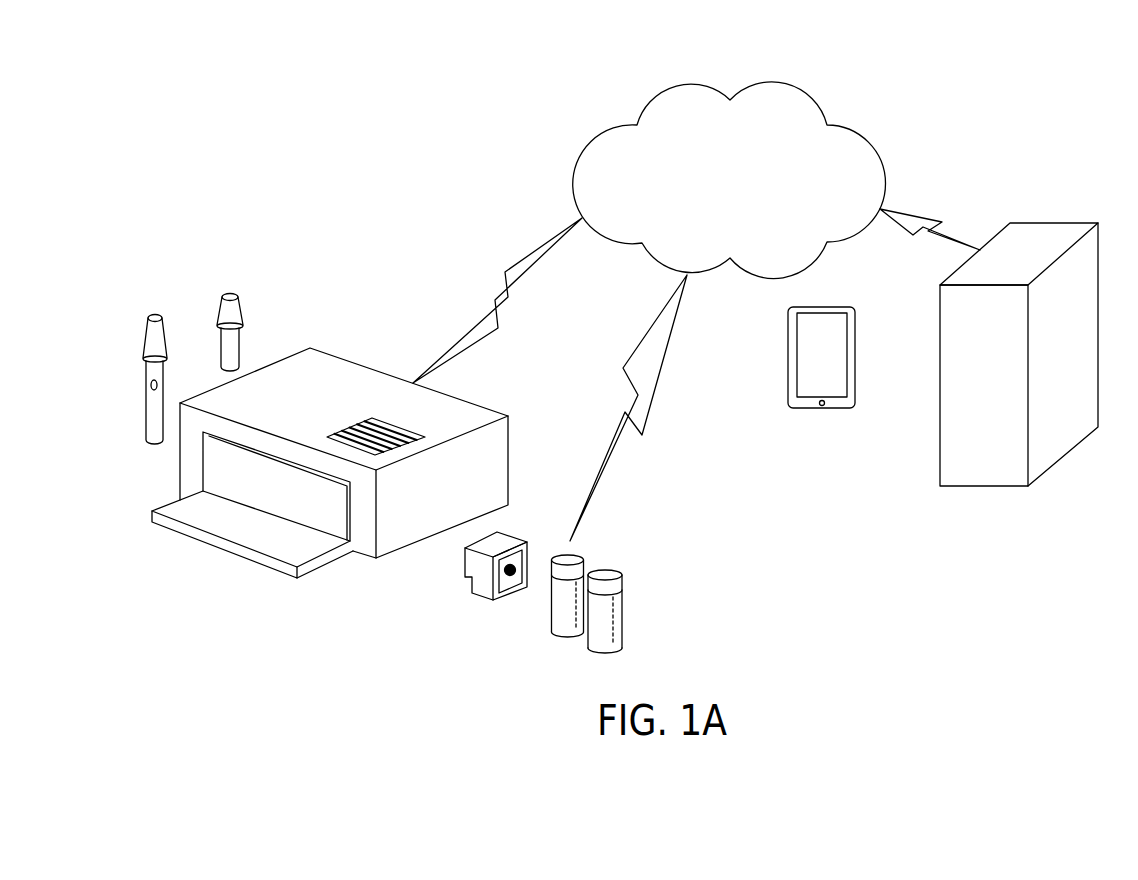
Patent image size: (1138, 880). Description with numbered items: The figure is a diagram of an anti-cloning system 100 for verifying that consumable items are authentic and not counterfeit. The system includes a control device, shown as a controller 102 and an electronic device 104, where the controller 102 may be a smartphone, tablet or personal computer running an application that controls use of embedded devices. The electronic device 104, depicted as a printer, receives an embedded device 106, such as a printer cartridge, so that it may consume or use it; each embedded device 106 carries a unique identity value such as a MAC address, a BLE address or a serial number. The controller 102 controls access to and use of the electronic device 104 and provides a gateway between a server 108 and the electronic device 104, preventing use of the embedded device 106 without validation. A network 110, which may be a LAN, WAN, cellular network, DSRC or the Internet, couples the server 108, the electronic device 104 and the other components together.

The anti-cloning system 100 is at (163, 158).
The controller 102 is at (822, 409).
The electronic device 104 is at (510, 442).
The embedded device 106 is at (628, 553).
The server 108 is at (1037, 481).
The network 110 is at (886, 183).